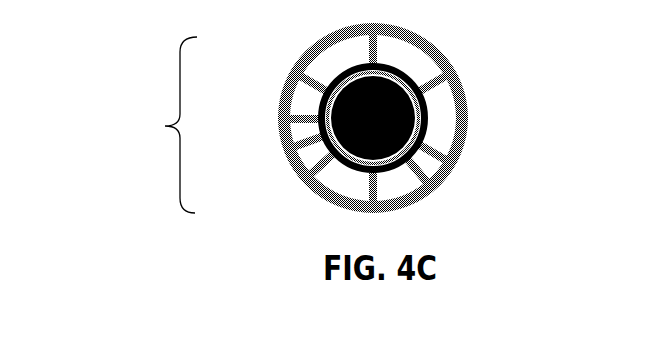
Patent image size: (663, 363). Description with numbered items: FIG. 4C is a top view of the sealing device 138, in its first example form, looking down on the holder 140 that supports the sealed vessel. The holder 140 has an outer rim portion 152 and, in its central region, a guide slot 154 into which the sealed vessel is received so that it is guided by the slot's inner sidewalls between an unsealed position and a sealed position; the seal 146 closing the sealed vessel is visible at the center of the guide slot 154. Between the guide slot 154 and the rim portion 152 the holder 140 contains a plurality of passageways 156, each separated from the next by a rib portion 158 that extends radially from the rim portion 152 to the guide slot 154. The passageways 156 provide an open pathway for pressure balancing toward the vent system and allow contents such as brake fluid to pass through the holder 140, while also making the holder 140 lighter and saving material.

The sealing device 138 is at (120, 125).
The holder 140 is at (264, 84).
The rim portion 152 is at (443, 57).
The rib portion 158 is at (443, 163).
The guide slot 154 is at (332, 167).
The seal 146 is at (318, 118).
The passageway 156 is at (420, 113).